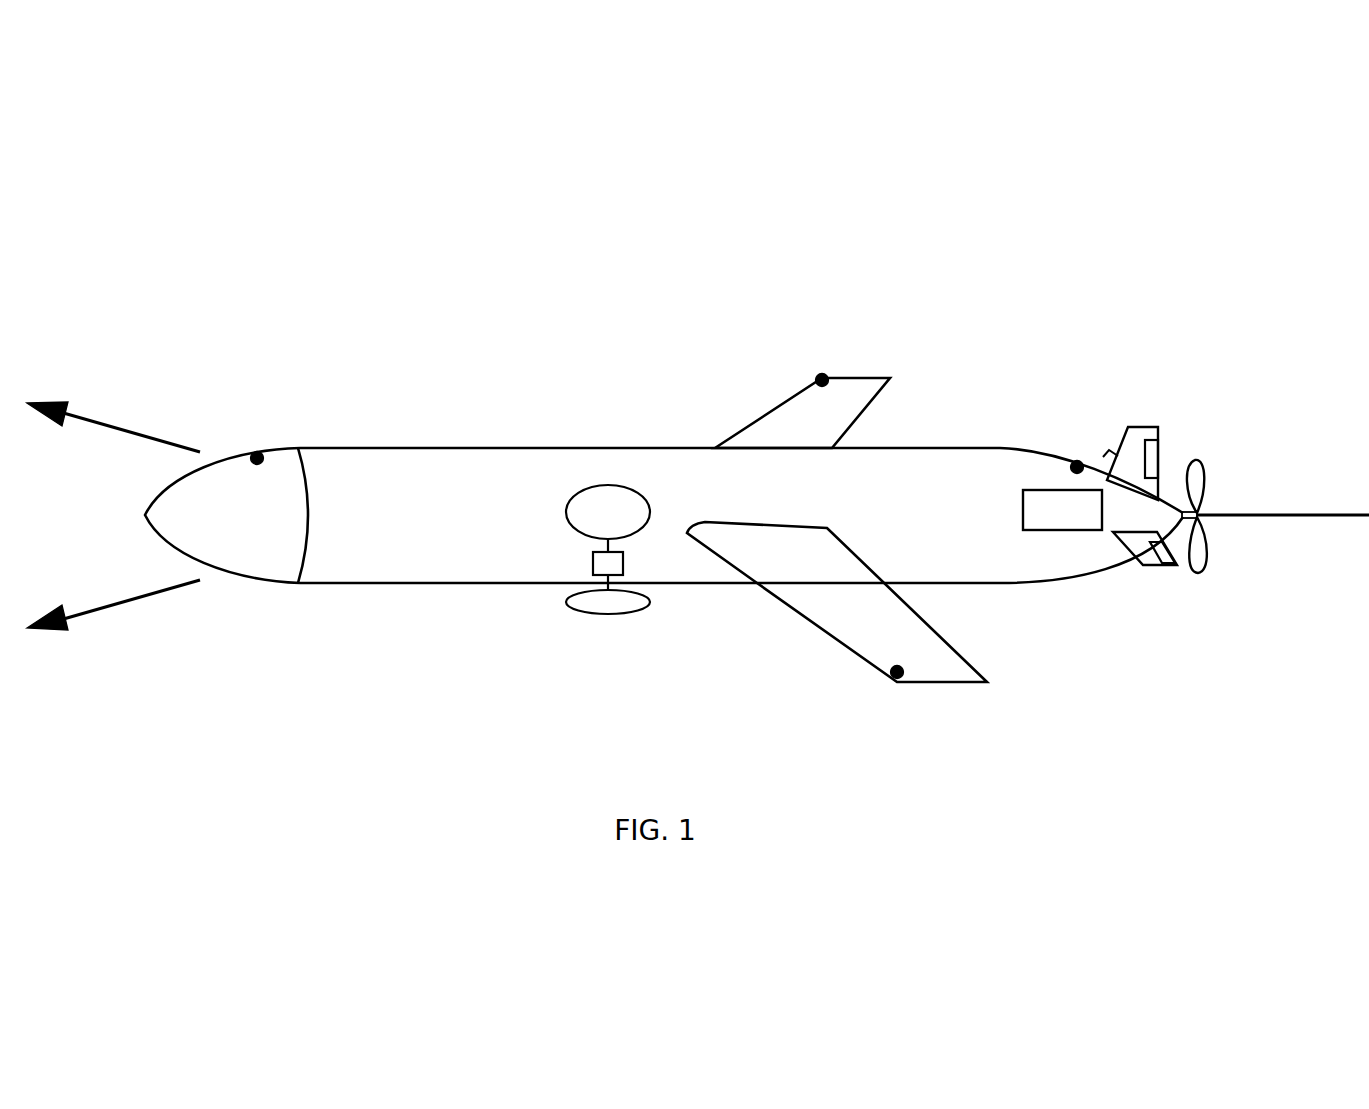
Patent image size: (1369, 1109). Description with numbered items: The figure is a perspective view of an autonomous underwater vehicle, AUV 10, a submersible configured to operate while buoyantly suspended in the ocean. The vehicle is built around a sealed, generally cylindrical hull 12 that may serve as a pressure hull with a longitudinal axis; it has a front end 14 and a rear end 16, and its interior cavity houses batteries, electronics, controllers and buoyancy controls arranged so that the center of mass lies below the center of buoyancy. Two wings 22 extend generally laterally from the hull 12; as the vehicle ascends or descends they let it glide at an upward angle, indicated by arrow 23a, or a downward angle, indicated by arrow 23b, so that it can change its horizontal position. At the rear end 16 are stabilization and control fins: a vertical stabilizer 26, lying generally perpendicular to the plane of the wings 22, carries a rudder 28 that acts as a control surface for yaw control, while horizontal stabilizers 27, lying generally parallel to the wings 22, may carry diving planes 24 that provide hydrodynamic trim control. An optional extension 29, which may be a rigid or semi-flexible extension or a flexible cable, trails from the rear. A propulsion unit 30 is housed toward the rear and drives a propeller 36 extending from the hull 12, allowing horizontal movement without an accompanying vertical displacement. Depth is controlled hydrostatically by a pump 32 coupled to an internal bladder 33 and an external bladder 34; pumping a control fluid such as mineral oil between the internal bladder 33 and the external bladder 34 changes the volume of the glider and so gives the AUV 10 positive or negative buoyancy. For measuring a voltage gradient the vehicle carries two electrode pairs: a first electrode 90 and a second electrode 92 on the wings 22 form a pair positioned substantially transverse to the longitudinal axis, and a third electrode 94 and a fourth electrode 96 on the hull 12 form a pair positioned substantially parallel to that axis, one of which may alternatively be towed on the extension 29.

The autonomous underwater vehicle 10 is at (738, 280).
The hull 12 is at (400, 448).
The front end 14 is at (268, 568).
The rear end 16 is at (1087, 560).
The wings 22 is at (782, 430).
The arrow indicating upward glide angle 23a is at (115, 428).
The arrow indicating downward glide angle 23b is at (115, 603).
The diving planes 24 is at (1170, 567).
The vertical stabilizer 26 is at (1133, 432).
The horizontal stabilizers 27 is at (1150, 560).
The rudder 28 is at (1157, 455).
The extension 29 is at (1353, 518).
The propulsion unit 30 is at (1042, 497).
The pump 32 is at (593, 563).
The internal bladder 33 is at (580, 510).
The external bladder 34 is at (600, 605).
The propeller 36 is at (1203, 547).
The first electrode 90 is at (820, 377).
The second electrode 92 is at (893, 677).
The third electrode 94 is at (252, 452).
The fourth electrode 96 is at (1080, 462).